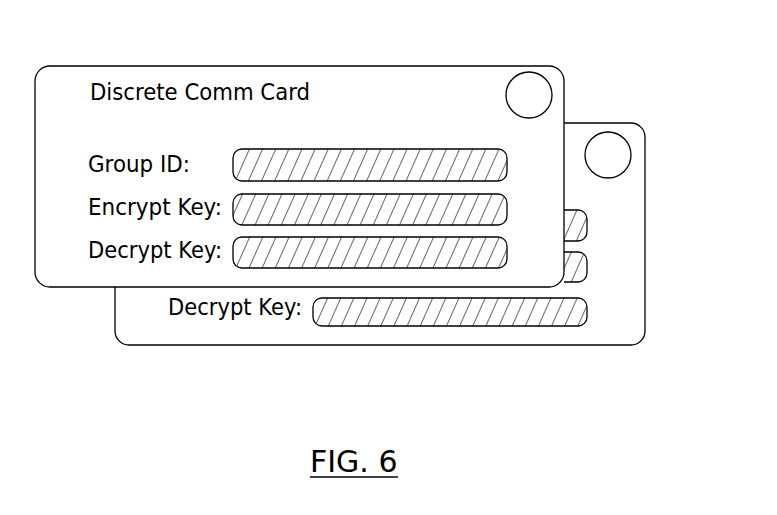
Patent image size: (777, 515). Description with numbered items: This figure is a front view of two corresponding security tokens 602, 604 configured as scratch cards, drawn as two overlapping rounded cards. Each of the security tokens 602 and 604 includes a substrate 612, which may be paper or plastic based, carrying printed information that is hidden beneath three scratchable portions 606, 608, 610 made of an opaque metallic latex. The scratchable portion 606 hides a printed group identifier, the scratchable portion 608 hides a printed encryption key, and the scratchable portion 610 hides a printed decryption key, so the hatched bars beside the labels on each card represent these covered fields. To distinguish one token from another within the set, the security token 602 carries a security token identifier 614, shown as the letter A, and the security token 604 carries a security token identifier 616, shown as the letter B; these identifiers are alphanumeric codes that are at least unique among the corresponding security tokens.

The security token 602 is at (563, 77).
The security token 604 is at (645, 137).
The scratchable portion 606 is at (587, 222).
The scratchable portion 608 is at (587, 265).
The scratchable portion 610 is at (587, 313).
The substrate 612 is at (417, 88).
The security token identifier 614 is at (527, 67).
The security token identifier 616 is at (624, 139).